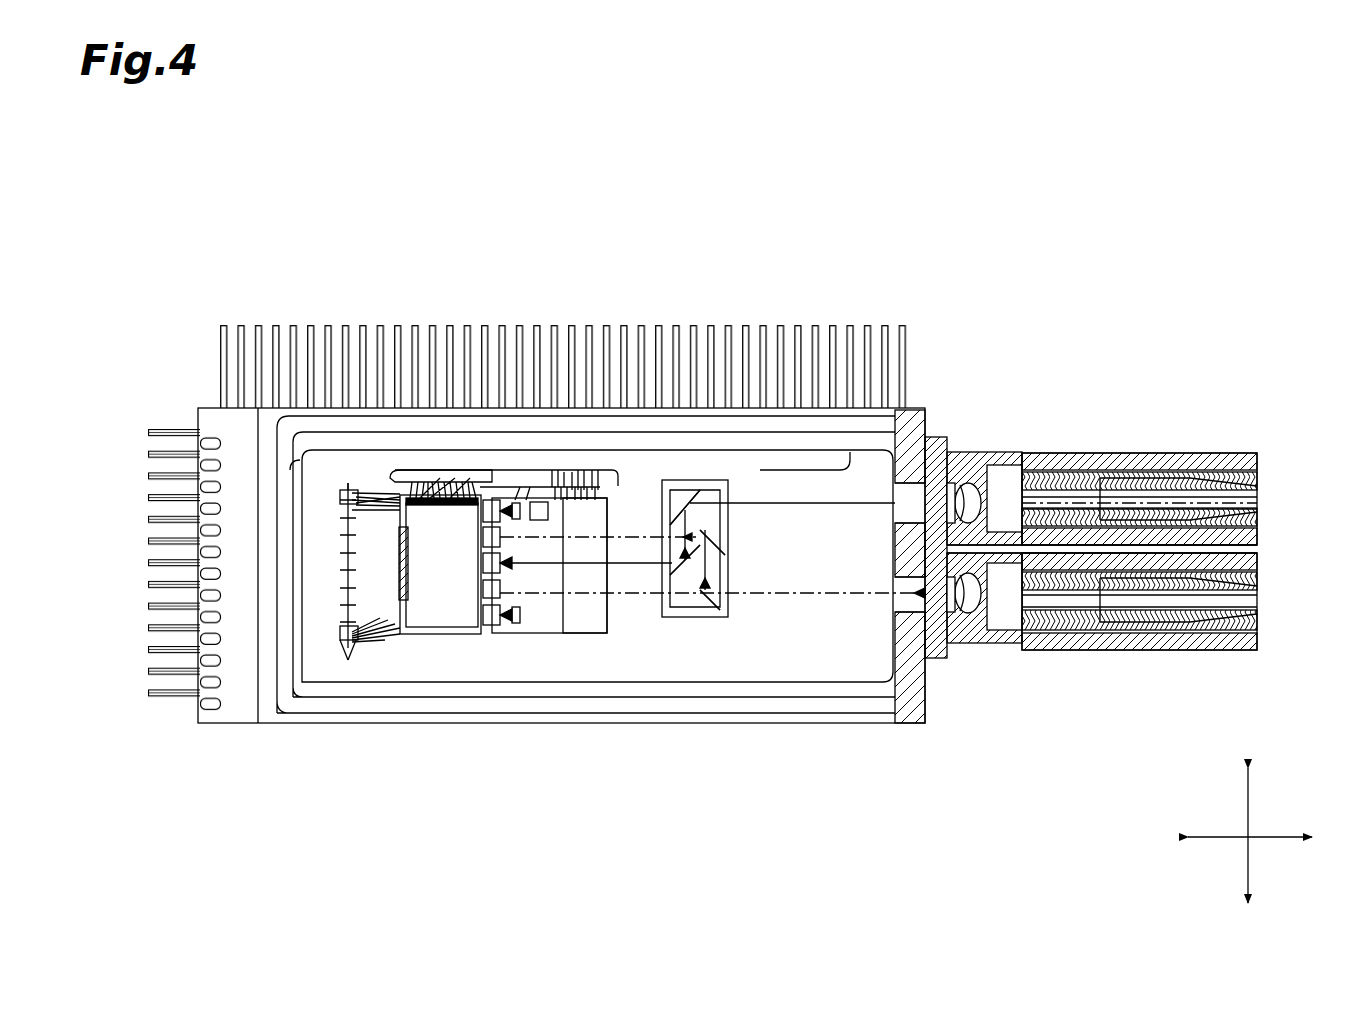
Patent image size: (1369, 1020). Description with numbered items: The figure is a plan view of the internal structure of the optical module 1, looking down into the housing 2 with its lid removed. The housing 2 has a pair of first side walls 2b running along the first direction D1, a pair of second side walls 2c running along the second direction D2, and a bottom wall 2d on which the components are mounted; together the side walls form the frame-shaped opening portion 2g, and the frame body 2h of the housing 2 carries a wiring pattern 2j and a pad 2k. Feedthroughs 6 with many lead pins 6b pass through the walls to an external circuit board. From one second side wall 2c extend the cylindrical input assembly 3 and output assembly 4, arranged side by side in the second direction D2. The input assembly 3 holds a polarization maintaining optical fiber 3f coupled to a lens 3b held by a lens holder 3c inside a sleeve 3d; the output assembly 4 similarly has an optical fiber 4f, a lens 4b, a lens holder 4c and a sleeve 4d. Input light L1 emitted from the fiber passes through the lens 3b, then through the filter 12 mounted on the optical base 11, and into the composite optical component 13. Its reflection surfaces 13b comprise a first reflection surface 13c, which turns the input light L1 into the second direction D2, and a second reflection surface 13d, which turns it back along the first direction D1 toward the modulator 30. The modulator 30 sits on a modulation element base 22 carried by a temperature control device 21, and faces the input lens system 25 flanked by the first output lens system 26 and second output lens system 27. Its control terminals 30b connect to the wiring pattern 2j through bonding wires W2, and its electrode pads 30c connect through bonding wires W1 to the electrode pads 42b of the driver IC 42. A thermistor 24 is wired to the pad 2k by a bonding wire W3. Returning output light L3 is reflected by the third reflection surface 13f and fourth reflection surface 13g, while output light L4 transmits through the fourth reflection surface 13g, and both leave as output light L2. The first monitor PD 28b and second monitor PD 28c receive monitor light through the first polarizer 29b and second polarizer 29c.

The optical module 1 is at (1050, 206).
The housing 2 is at (930, 414).
The first side wall 2b is at (722, 424).
The second side wall 2c is at (934, 662).
The bottom wall 2d is at (812, 660).
The opening portion 2g is at (296, 470).
The frame body 2h is at (352, 487).
The wiring pattern 2j is at (412, 476).
The pad 2k is at (600, 470).
The input assembly 3 is at (1102, 426).
The lens 3b is at (970, 488).
The lens holder 3c is at (952, 470).
The sleeve 3d is at (1005, 462).
The optical fiber 3f is at (1190, 490).
The output assembly 4 is at (1102, 652).
The lens 4b is at (972, 618).
The lens holder 4c is at (953, 635).
The sleeve 4d is at (1003, 640).
The optical fiber 4f is at (1200, 598).
The feedthrough 6 is at (232, 412).
The lead pin 6b is at (150, 505).
The optical base 11 is at (705, 480).
The filter 12 is at (700, 470).
The composite optical component 13 is at (741, 538).
The reflection surface 13b is at (681, 620).
The first reflection surface 13c is at (686, 495).
The second reflection surface 13d is at (672, 578).
The third reflection surface 13f is at (716, 545).
The fourth reflection surface 13g is at (712, 600).
The temperature control device 21 is at (585, 634).
The modulation element base 22 is at (540, 634).
The thermistor 24 is at (595, 487).
The input lens system 25 is at (537, 502).
The first output lens system 26 is at (503, 583).
The second output lens system 27 is at (492, 520).
The first monitor PD 28b is at (540, 636).
The second monitor PD 28c is at (500, 503).
The first polarizer 29b is at (488, 635).
The second polarizer 29c is at (448, 498).
The modulator 30 is at (457, 600).
The control terminal 30b is at (440, 506).
The electrode pad 30c is at (384, 602).
The driver IC 42 is at (388, 605).
The electrode pad 42b is at (350, 645).
The bonding wire W1 is at (345, 550).
The bonding wire W2 is at (360, 490).
The bonding wire W3 is at (560, 496).
The input light L1 is at (822, 506).
The output light L2 is at (850, 597).
The output light L3 is at (655, 537).
The output light L4 is at (630, 595).
The first direction D1 is at (1222, 838).
The second direction D2 is at (1250, 863).